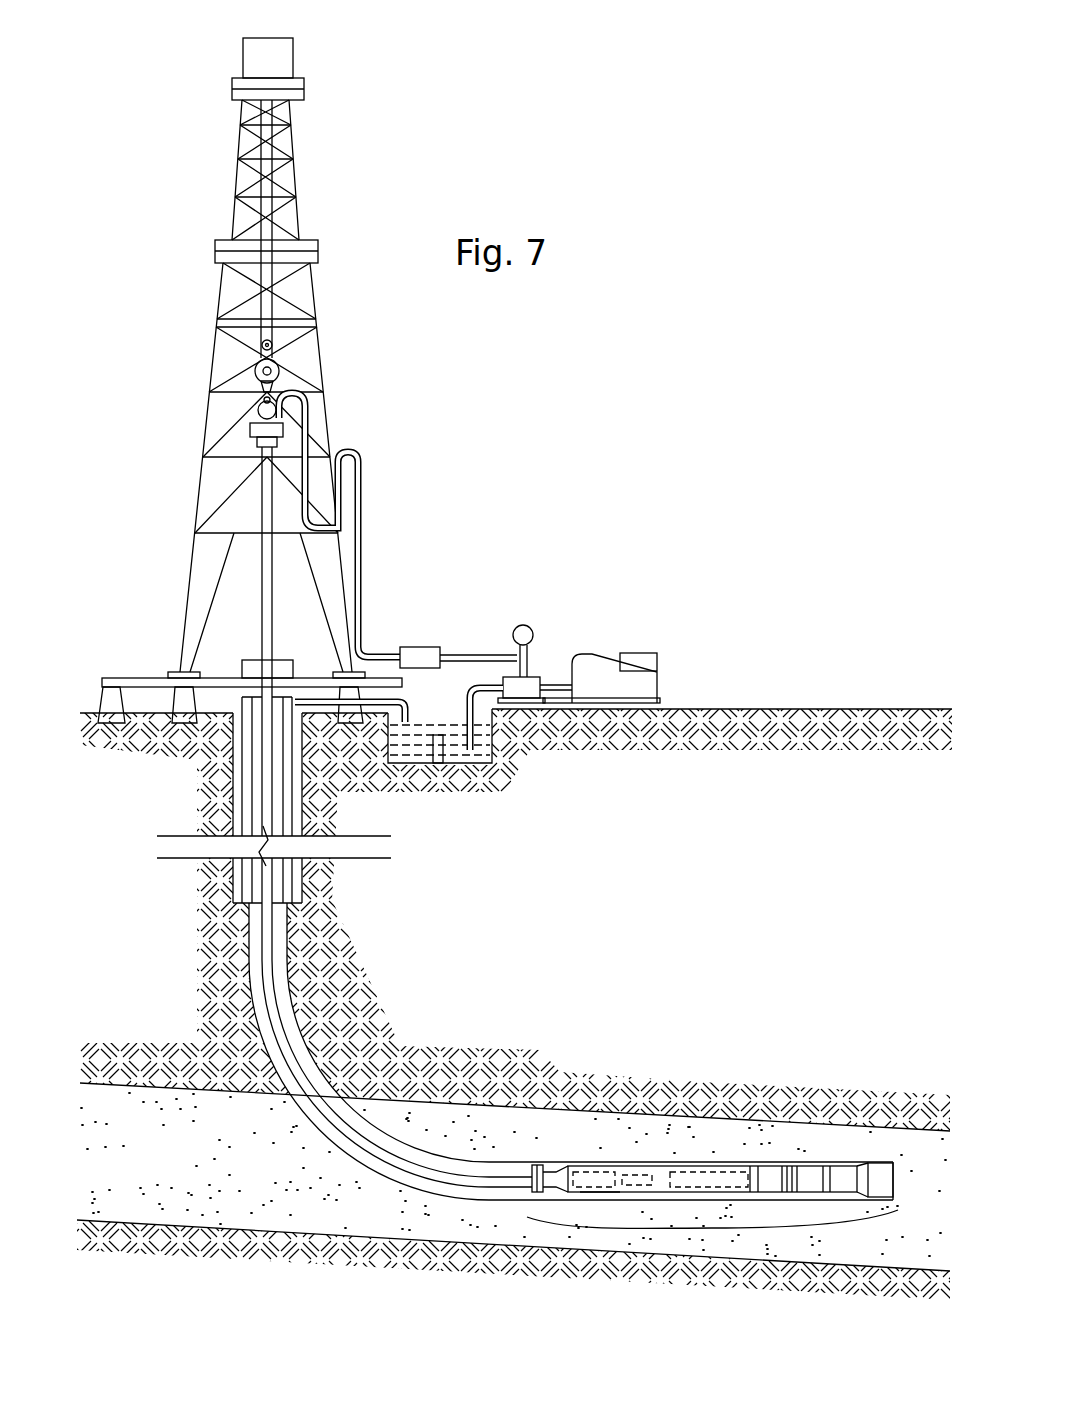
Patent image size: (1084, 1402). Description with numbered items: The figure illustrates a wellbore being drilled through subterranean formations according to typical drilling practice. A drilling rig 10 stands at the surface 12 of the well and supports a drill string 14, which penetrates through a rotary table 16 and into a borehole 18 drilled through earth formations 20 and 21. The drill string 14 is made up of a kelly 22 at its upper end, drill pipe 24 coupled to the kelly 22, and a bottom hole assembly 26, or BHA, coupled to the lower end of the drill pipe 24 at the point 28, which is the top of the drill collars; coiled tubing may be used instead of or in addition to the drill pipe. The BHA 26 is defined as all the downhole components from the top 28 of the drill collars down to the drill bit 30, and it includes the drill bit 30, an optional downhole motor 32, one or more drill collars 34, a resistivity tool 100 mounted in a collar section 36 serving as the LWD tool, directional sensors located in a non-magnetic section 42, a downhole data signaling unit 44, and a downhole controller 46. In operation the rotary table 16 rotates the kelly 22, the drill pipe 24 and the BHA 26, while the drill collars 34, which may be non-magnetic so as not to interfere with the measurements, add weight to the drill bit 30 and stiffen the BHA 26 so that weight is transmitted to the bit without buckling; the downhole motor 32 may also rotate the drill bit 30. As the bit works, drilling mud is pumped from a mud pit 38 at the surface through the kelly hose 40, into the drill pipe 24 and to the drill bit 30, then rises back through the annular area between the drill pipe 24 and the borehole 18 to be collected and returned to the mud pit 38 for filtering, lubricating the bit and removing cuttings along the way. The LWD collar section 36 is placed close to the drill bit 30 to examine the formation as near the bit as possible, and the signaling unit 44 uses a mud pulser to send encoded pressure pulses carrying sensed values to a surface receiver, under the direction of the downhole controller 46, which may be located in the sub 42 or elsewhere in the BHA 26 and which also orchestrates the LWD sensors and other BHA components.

The drilling rig 10 is at (498, 398).
The surface 12 is at (743, 708).
The drill string 14 is at (292, 1006).
The rotary table 16 is at (285, 660).
The borehole 18 is at (285, 933).
The earth formation 20 is at (693, 940).
The earth formation 21 is at (282, 1183).
The kelly 22 is at (257, 602).
The drill pipe 24 is at (395, 1145).
The bottom hole assembly 26 is at (712, 1228).
The top of the drill collars 28 is at (532, 1160).
The drill bit 30 is at (883, 1183).
The downhole motor 32 is at (840, 1177).
The drill collars 34 is at (812, 1177).
The collar section 36 is at (700, 1163).
The mud pit 38 is at (410, 757).
The kelly hose 40 is at (465, 655).
The non-magnetic section 42 is at (612, 1163).
The downhole data signaling unit 44 is at (640, 1172).
The downhole controller 46 is at (598, 1192).
The resistivity tool 100 is at (717, 1170).